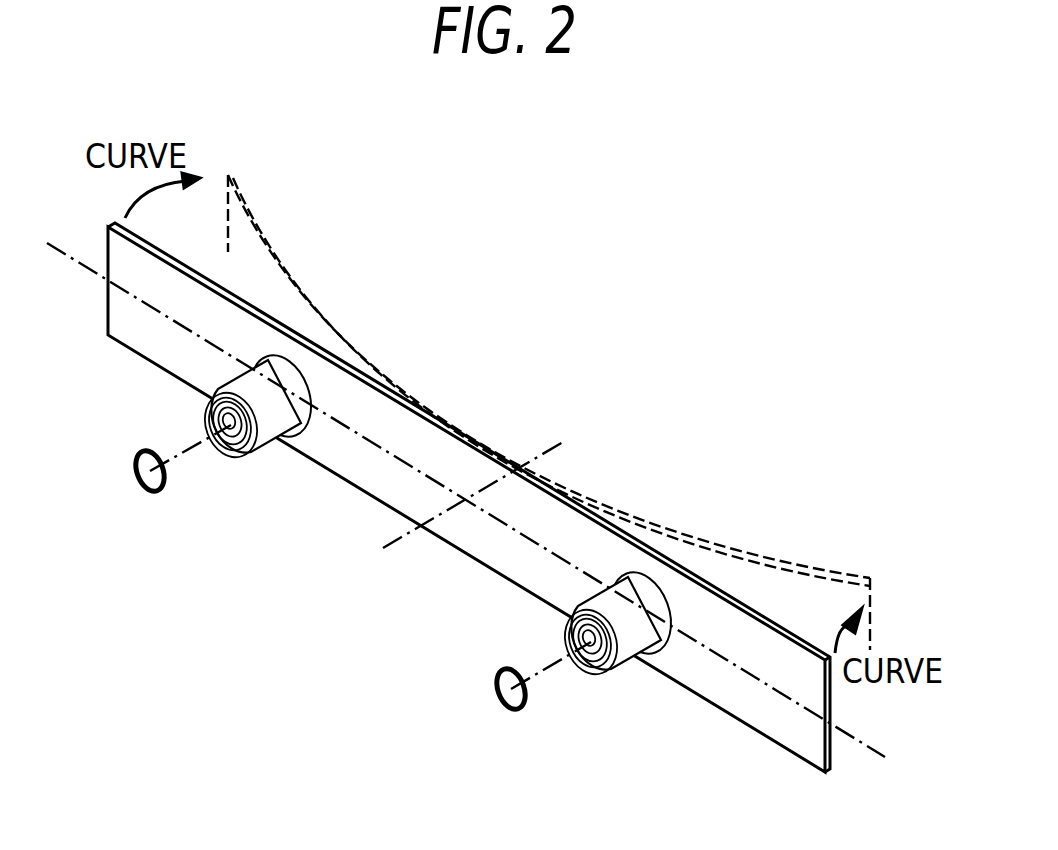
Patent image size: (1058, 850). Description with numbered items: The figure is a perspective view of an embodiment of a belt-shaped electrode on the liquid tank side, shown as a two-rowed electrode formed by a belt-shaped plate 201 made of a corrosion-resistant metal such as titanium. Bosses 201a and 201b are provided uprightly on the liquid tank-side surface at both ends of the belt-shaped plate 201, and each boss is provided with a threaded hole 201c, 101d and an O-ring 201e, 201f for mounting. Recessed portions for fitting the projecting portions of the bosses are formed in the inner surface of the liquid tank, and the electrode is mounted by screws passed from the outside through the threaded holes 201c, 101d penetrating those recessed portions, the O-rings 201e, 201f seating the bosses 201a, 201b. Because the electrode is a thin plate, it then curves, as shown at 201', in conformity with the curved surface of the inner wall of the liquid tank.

The belt-shaped plate 201 is at (469, 521).
The curved electrode 201' is at (555, 412).
The boss 201a is at (285, 452).
The boss 201b is at (642, 646).
The threaded hole 201c is at (233, 457).
The roller bearing 101d is at (588, 673).
The O-ring 201e is at (148, 497).
The O-ring 201f is at (512, 713).